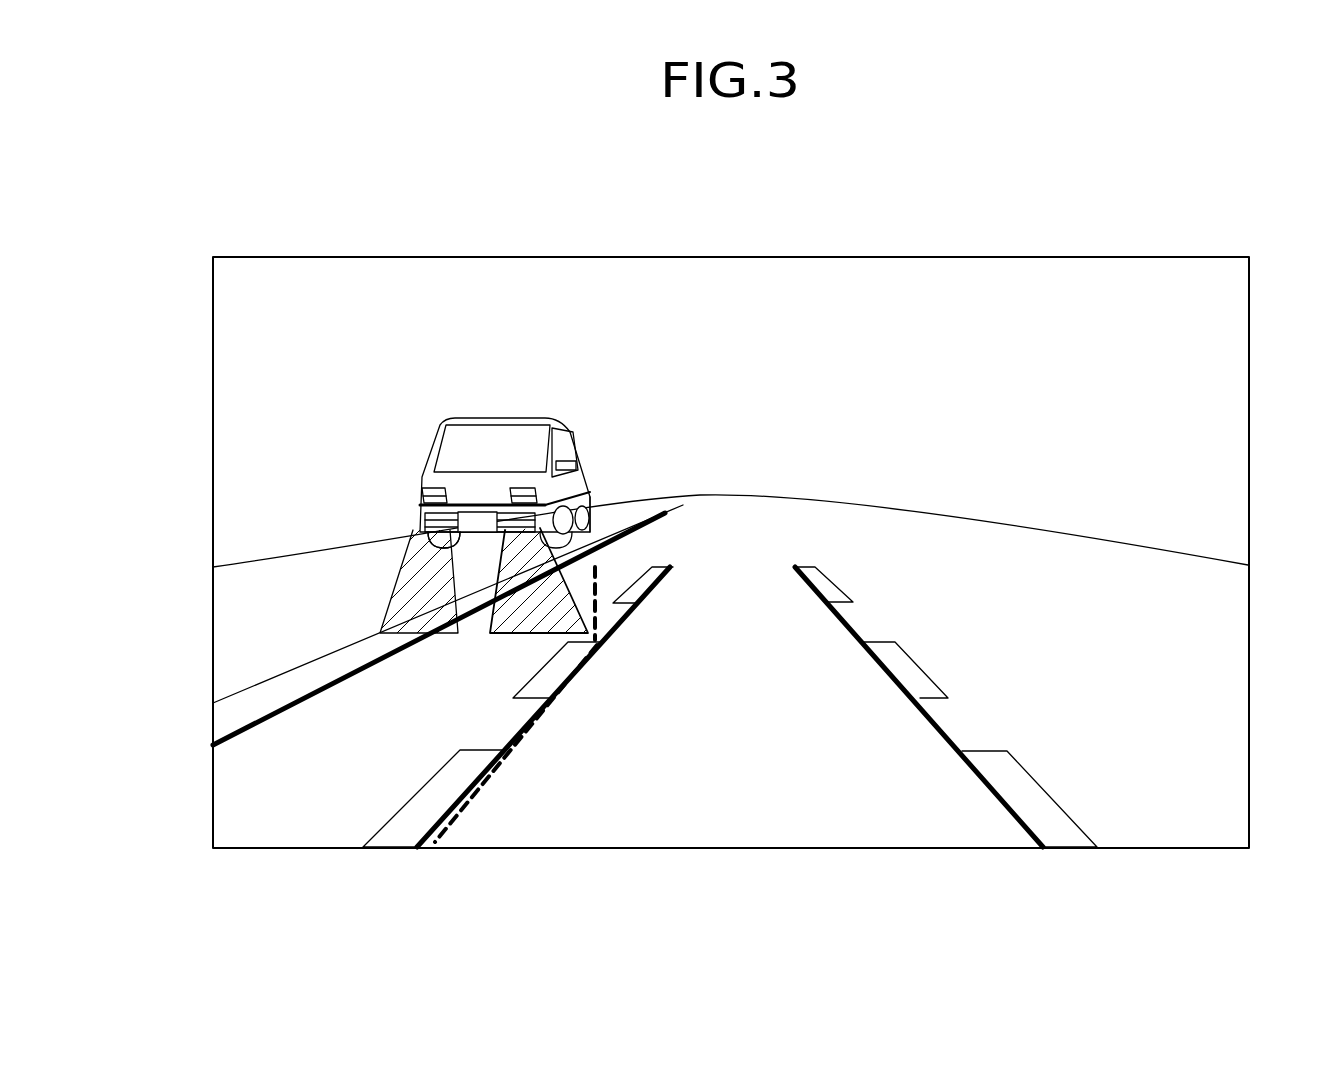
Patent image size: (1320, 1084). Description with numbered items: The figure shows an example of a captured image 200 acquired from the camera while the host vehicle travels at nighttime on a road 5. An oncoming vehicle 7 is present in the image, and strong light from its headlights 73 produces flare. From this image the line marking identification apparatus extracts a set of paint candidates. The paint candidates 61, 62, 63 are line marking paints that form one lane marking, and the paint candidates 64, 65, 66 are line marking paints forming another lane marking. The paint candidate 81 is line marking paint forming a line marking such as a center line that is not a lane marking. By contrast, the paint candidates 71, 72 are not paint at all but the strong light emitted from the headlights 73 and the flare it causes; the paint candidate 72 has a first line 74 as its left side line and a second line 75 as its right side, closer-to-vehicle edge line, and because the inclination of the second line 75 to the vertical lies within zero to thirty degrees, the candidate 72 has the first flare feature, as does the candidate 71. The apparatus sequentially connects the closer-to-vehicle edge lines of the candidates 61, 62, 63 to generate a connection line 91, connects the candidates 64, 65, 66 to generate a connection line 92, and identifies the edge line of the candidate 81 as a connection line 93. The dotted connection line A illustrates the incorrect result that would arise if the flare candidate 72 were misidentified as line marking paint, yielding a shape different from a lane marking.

The captured image 200 is at (1190, 257).
The road 5 is at (1188, 717).
The oncoming vehicle 7 is at (433, 492).
The headlights 73 is at (524, 492).
The first line 74 is at (450, 540).
The second line 75 is at (592, 525).
The paint candidate 71 is at (417, 567).
The paint candidate 72 is at (518, 615).
The paint candidate 81 is at (252, 684).
The connection line 93 is at (303, 703).
The connection line 91 is at (663, 585).
The connection line 92 is at (860, 633).
The paint candidate 63 is at (645, 560).
The paint candidate 62 is at (540, 668).
The paint candidate 61 is at (403, 809).
The paint candidate 66 is at (835, 582).
The paint candidate 65 is at (923, 667).
The paint candidate 64 is at (1072, 820).
The connection line A is at (483, 785).